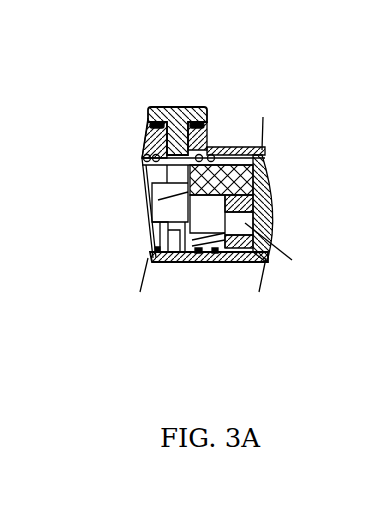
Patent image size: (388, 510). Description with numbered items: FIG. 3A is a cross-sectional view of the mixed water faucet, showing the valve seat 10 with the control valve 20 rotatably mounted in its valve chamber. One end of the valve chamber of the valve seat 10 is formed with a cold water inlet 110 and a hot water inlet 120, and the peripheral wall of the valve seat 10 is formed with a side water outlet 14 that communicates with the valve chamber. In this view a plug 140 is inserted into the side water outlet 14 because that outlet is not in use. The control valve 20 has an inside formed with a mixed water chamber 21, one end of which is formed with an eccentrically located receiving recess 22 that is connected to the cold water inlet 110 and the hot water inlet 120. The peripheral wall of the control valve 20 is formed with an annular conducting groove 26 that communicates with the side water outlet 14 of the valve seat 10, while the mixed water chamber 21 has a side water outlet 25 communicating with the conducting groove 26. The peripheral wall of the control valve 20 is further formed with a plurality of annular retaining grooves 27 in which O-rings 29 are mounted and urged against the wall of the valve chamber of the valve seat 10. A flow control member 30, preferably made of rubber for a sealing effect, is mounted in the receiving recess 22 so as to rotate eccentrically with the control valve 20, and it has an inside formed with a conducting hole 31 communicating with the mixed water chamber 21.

The valve seat 10 is at (219, 136).
The side water outlet 14 is at (147, 130).
The control valve 20 is at (265, 150).
The mixed water chamber 21 is at (239, 148).
The receiving recess 22 is at (233, 262).
The side water outlet 25 is at (177, 262).
The conducting groove 26 is at (150, 163).
The retaining grooves 27 is at (153, 260).
The O-rings 29 is at (209, 257).
The flow control member 30 is at (206, 250).
The conducting hole 31 is at (262, 286).
The cold water inlet 110 is at (203, 275).
The hot water inlet 120 is at (292, 260).
The plug 140 is at (177, 107).